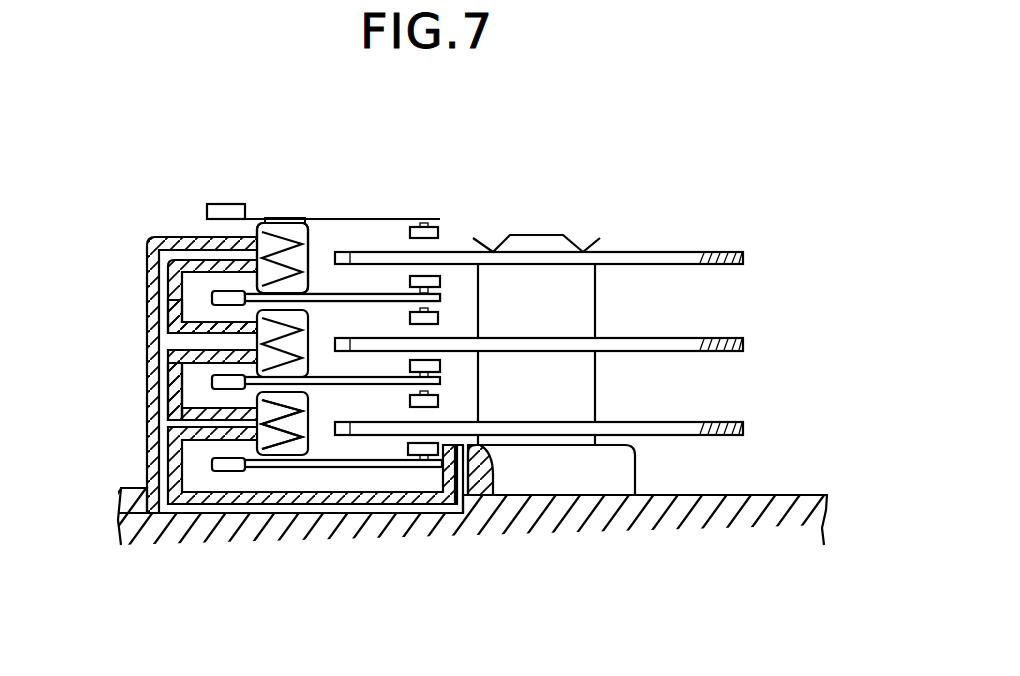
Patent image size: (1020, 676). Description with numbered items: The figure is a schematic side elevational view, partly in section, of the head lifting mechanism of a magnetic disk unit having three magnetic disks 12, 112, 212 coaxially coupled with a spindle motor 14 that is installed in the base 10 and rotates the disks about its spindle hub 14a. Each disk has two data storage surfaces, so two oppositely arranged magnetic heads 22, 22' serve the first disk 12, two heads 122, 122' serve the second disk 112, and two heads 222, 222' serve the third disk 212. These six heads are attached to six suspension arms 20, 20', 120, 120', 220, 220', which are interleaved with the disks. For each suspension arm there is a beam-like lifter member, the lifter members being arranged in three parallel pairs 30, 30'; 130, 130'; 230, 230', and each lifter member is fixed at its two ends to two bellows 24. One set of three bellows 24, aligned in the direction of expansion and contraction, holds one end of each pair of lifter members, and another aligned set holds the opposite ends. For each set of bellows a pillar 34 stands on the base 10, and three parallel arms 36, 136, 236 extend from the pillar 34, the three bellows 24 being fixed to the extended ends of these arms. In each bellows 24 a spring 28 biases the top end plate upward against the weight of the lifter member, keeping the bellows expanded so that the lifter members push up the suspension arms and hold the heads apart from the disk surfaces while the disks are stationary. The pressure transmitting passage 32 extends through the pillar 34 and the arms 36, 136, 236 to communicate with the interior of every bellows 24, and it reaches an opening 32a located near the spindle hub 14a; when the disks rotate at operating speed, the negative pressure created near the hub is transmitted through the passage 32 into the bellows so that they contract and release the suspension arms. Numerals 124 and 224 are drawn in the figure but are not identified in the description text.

The base 10 is at (780, 495).
The magnetic disk 12 is at (698, 252).
The second magnetic disk 112 is at (705, 338).
The third magnetic disk 212 is at (707, 422).
The spindle motor 14 is at (562, 235).
The spindle hub 14a is at (583, 444).
The suspension arm 20 is at (298, 235).
The suspension arm 20′ is at (325, 293).
The suspension arm 120 is at (325, 331).
The suspension arm 120′ is at (323, 376).
The suspension arm 220 is at (337, 398).
The suspension arm 220′ is at (325, 467).
The magnetic head 22 is at (440, 230).
The magnetic head 22′ is at (440, 280).
The magnetic head 122 is at (441, 318).
The magnetic head 122′ is at (441, 364).
The magnetic head 222 is at (441, 400).
The magnetic head 222′ is at (440, 447).
The bellows 24 is at (245, 236).
The spring 28 is at (312, 305).
The connecting portion 124 is at (328, 250).
The third spring holder 224 is at (312, 440).
The lifter member 30 is at (282, 221).
The lifter member 30′ is at (177, 272).
The lifter member 130 is at (172, 314).
The lifter member 130′ is at (172, 379).
The arm 136 is at (180, 366).
The lifter member 230 is at (172, 402).
The lifter member 230′ is at (268, 440).
The arm 236 is at (203, 433).
The pressure transmitting passage 32 is at (413, 511).
The opening 32a is at (472, 497).
The pillar 34 is at (150, 448).
The arm 36 is at (183, 246).